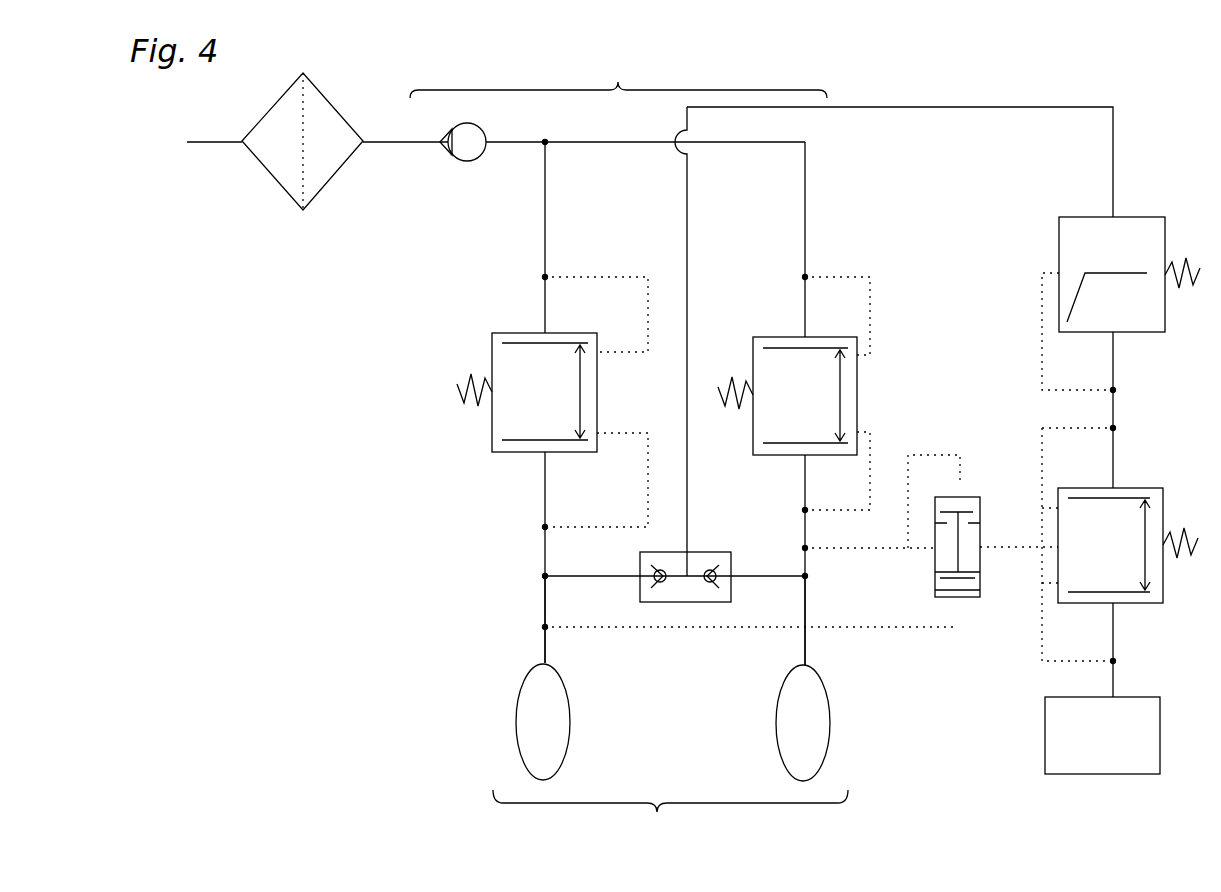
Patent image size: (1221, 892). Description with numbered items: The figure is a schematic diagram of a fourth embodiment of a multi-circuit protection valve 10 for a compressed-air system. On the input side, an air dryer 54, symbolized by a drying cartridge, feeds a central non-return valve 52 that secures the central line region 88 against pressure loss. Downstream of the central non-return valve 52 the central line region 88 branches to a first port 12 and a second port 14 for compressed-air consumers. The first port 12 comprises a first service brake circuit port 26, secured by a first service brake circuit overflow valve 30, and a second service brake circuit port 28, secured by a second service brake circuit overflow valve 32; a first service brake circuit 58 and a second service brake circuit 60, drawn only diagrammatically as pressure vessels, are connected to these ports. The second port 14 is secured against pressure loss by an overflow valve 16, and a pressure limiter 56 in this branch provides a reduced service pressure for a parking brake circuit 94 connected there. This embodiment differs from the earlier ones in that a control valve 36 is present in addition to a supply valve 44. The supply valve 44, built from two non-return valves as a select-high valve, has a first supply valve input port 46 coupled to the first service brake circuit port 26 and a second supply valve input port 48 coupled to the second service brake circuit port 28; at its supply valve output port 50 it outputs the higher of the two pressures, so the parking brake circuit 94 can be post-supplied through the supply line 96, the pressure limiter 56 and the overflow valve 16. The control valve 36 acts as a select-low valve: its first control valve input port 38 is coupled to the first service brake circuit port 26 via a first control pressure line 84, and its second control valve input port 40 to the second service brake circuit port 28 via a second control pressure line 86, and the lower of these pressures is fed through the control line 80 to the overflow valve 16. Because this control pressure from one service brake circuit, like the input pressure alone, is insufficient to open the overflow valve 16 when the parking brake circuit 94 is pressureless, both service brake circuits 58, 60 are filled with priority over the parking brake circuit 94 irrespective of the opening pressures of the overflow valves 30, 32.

The multi-circuit protection valve 10 is at (427, 637).
The first port 12 is at (670, 821).
The second port 14 is at (1115, 686).
The overflow valve 16 is at (1140, 487).
The first service brake circuit port 26 is at (541, 645).
The second service brake circuit port 28 is at (808, 653).
The first service brake circuit overflow valve 30 is at (509, 331).
The second service brake circuit overflow valve 32 is at (785, 335).
The control valve 36 is at (934, 558).
The first control valve input port 38 is at (960, 600).
The second control valve input port 40 is at (945, 553).
The supply valve 44 is at (675, 580).
The first supply valve input port 46 is at (640, 575).
The second supply valve input port 48 is at (733, 577).
The supply valve output port 50 is at (690, 552).
The central non-return valve 52 is at (462, 166).
The air dryer 54 is at (282, 188).
The pressure limiter 56 is at (1125, 215).
The first service brake circuit 58 is at (557, 700).
The second service brake circuit 60 is at (790, 699).
The control line 80 is at (1020, 552).
The first control pressure line 84 is at (699, 630).
The second control pressure line 86 is at (940, 452).
The central line region 88 is at (618, 72).
The parking brake circuit 94 is at (1120, 756).
The supply line 96 is at (987, 108).